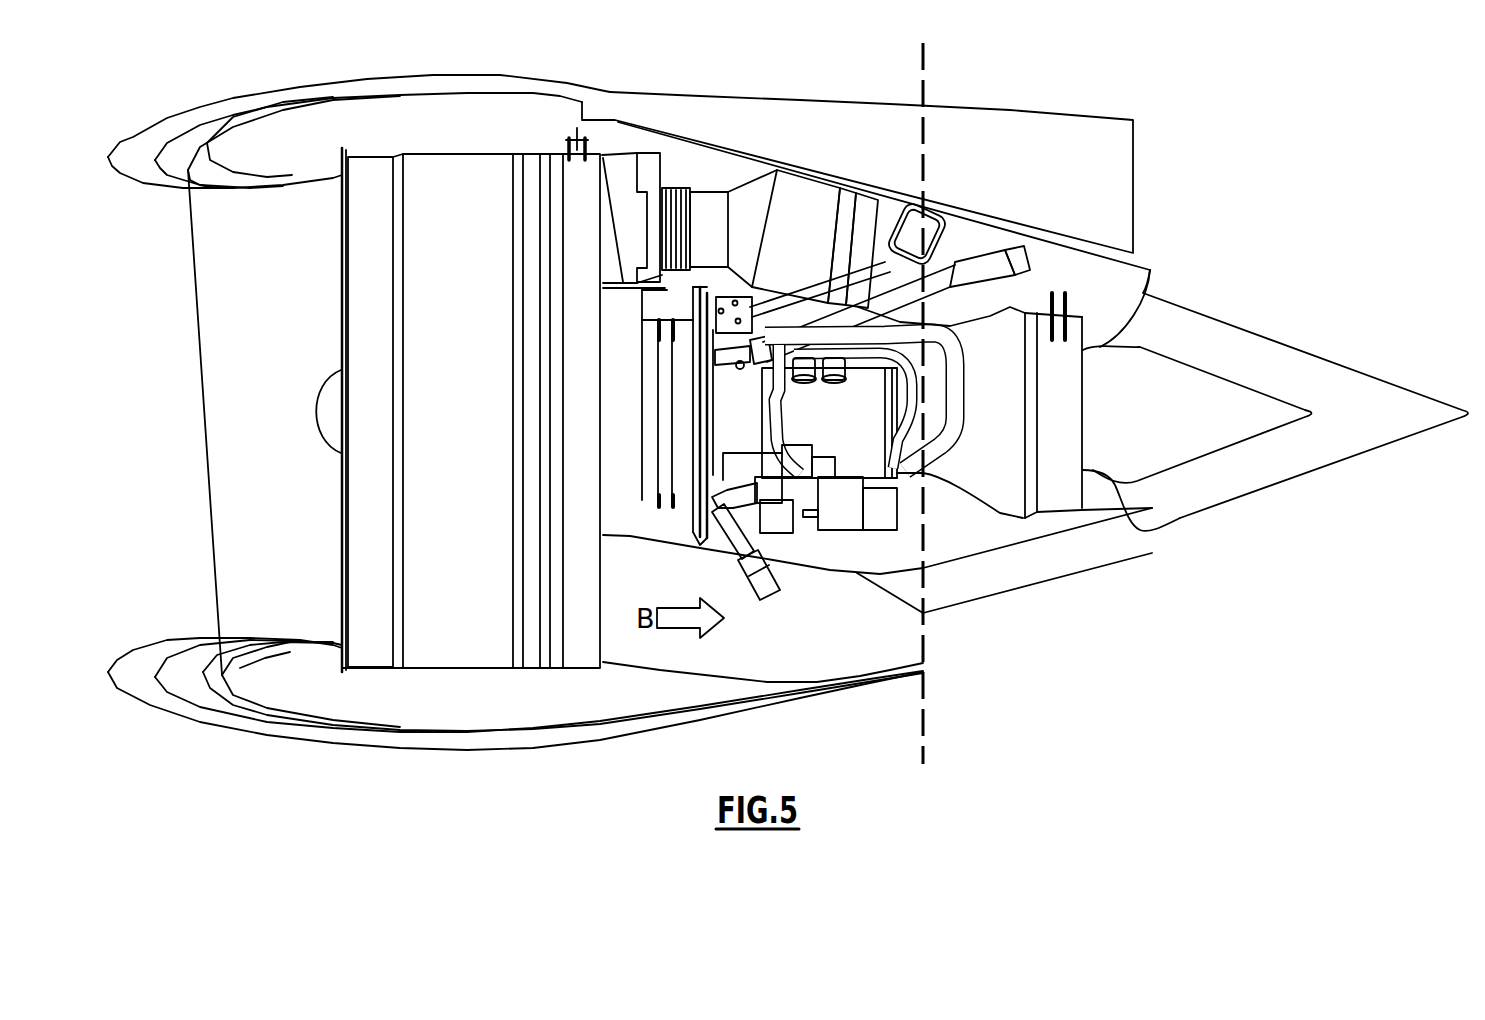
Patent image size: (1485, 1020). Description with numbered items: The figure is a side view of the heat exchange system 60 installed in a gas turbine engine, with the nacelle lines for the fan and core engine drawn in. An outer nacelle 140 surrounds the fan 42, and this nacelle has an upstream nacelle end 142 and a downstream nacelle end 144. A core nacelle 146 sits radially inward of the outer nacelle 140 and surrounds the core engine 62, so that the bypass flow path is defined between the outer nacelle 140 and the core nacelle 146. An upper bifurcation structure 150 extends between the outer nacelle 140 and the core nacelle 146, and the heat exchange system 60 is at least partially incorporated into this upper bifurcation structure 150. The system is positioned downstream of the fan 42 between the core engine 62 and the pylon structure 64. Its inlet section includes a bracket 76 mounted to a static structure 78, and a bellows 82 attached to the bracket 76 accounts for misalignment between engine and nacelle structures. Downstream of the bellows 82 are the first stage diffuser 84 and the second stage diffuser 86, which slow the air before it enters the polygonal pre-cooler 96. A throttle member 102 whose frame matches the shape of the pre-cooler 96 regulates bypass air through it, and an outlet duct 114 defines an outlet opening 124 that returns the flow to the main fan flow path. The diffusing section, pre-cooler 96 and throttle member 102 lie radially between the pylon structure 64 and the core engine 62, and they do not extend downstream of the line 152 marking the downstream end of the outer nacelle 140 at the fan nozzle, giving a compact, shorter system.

The fan 42 is at (393, 523).
The heat exchange system 60 is at (755, 103).
The core engine 62 is at (864, 432).
The pylon structure 64 is at (1050, 118).
The bracket 76 is at (628, 158).
The static structure 78 is at (645, 293).
The bellows 82 is at (672, 188).
The first stage diffuser 84 is at (705, 203).
The second stage diffuser 86 is at (748, 182).
The pre-cooler 96 is at (808, 236).
The throttle member 102 is at (843, 190).
The outlet duct 114 is at (875, 208).
The outlet opening 124 is at (950, 240).
The outer nacelle 140 is at (312, 752).
The upstream nacelle end 142 is at (110, 678).
The downstream nacelle end 144 is at (920, 673).
The core nacelle 146 is at (978, 585).
The upper bifurcation structure 150 is at (615, 220).
The line 152 is at (925, 72).